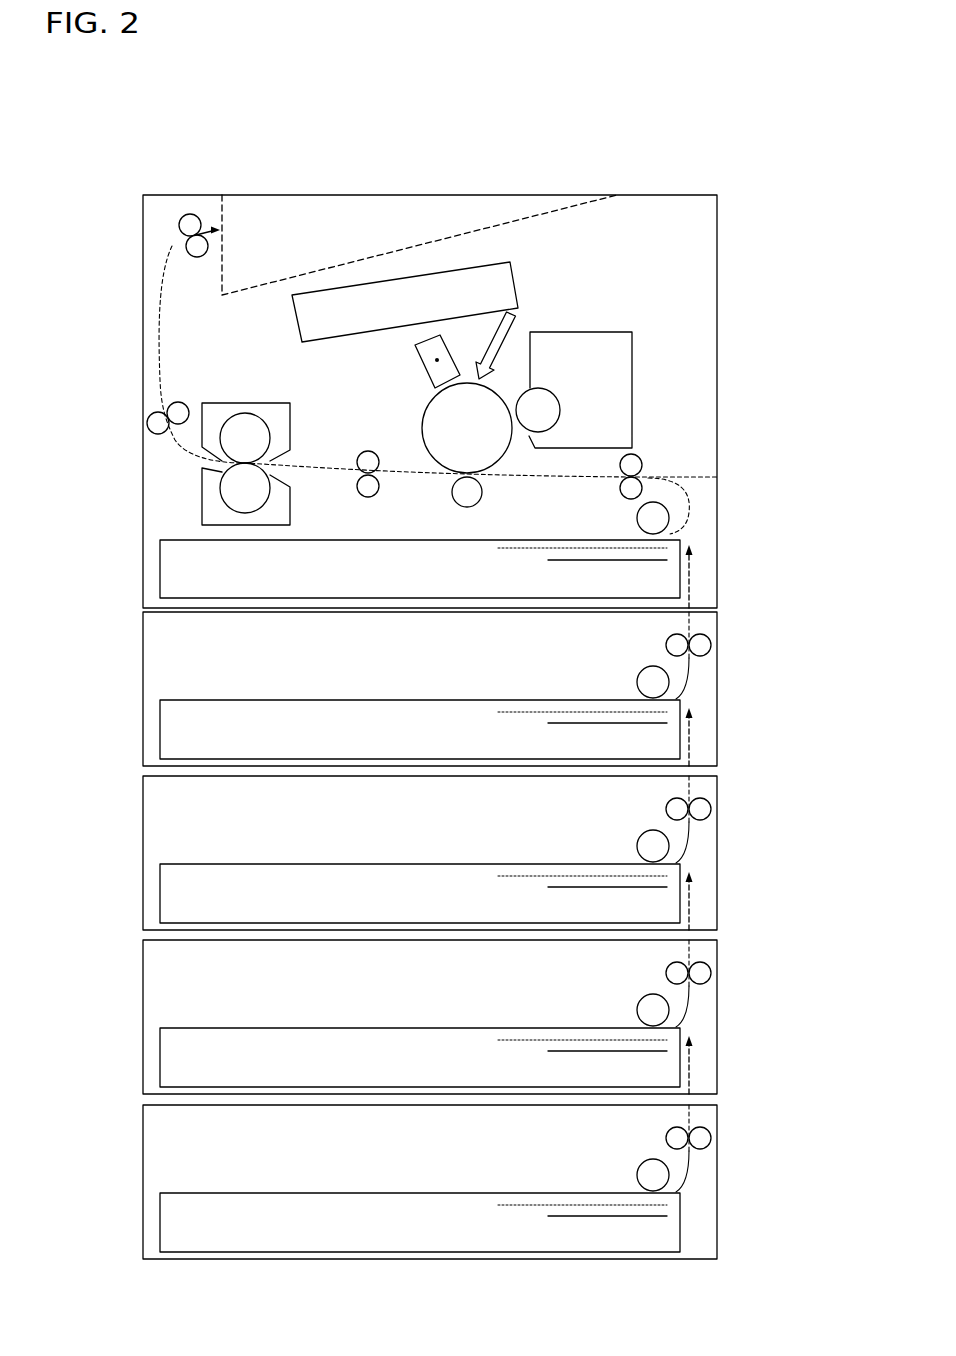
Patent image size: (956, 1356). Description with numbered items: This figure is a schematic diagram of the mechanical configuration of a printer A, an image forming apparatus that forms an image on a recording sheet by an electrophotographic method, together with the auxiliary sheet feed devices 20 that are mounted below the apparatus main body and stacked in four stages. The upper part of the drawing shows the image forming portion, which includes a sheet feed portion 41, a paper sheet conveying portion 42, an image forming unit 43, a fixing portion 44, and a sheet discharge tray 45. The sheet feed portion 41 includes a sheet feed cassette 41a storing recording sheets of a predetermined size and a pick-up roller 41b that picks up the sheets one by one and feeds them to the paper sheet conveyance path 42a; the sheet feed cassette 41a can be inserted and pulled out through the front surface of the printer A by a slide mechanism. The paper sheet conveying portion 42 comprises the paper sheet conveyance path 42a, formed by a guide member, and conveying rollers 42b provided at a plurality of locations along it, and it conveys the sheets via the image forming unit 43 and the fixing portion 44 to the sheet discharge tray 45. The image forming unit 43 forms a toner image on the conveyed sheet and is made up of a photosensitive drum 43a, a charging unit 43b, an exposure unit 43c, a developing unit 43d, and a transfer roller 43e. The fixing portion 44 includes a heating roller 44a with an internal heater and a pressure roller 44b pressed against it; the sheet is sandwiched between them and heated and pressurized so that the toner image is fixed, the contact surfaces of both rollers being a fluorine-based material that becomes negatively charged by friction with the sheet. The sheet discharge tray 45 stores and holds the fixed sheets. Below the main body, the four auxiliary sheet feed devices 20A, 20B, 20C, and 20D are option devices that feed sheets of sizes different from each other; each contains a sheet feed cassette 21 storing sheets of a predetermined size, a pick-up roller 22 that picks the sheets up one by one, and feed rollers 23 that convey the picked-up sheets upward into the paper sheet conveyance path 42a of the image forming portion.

The printer A is at (760, 200).
The auxiliary sheet feed devices 20 is at (479, 935).
The auxiliary sheet feed device 20A is at (718, 688).
The auxiliary sheet feed device 20B is at (718, 852).
The auxiliary sheet feed device 20C is at (718, 1016).
The auxiliary sheet feed device 20D is at (718, 1181).
The sheet feed cassette 21 is at (412, 698).
The pick-up roller 22 is at (637, 682).
The feed rollers 23 is at (667, 643).
The sheet feed portion 41 is at (127, 553).
The sheet feed cassette 41a is at (160, 578).
The pick-up roller 41b is at (637, 518).
The paper sheet conveying portion 42 is at (678, 405).
The paper sheet conveyance path 42a is at (717, 477).
The conveying rollers 42b is at (189, 213).
The image forming unit 43 is at (605, 268).
The photosensitive drum 43a is at (422, 430).
The charging unit 43b is at (421, 360).
The exposure unit 43c is at (515, 290).
The developing unit 43d is at (592, 332).
The transfer roller 43e is at (455, 500).
The fixing portion 44 is at (228, 385).
The heating roller 44a is at (250, 414).
The pressure roller 44b is at (202, 492).
The sheet discharge tray 45 is at (370, 258).